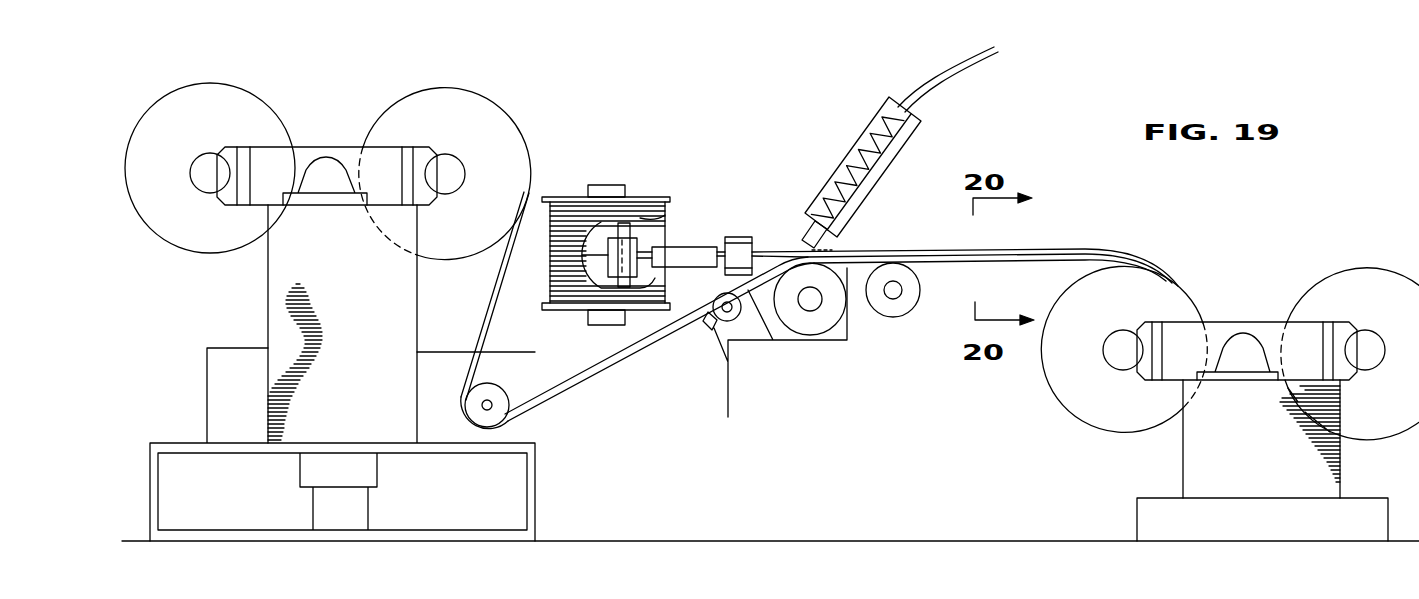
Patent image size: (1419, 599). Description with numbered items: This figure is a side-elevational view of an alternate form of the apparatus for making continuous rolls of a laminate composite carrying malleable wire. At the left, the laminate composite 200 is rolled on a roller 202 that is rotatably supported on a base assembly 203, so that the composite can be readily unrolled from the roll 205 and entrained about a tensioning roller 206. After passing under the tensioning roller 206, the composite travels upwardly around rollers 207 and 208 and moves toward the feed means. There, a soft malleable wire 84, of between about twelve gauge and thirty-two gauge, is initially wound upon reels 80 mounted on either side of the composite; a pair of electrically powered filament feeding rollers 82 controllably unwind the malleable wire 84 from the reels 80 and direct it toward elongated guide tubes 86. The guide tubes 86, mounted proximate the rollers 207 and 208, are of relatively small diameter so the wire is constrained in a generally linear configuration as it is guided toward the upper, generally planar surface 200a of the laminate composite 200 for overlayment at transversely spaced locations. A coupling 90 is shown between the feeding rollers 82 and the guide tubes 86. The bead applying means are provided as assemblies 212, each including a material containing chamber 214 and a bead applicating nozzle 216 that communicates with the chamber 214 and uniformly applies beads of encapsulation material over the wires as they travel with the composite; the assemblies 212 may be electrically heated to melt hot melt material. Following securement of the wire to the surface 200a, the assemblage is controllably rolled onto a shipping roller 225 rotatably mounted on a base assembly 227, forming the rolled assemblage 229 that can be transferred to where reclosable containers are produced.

The reel 80 is at (604, 190).
The filament feeding roller 82 is at (632, 243).
The malleable wire 84 is at (593, 238).
The guide tube 86 is at (685, 250).
The coupling 90 is at (735, 237).
The laminate composite 200 is at (617, 366).
The upper surface 200a is at (580, 369).
The roller 202 is at (448, 168).
The base assembly 203 is at (288, 313).
The roll 205 is at (492, 100).
The tensioning roller 206 is at (476, 402).
The roller 207 is at (724, 313).
The roller 208 is at (812, 316).
The bead applying assembly 212 is at (858, 140).
The material containing chamber 214 is at (836, 181).
The bead applicating nozzle 216 is at (807, 239).
The shipping roller 225 is at (1115, 338).
The base assembly 227 is at (1192, 463).
The rolled assemblage 229 is at (1097, 407).